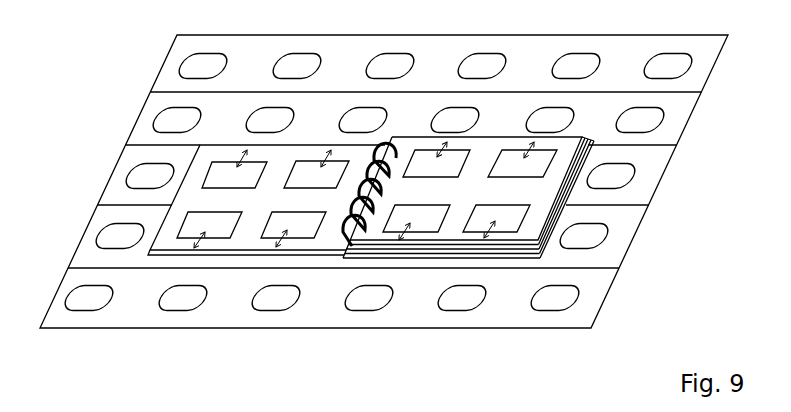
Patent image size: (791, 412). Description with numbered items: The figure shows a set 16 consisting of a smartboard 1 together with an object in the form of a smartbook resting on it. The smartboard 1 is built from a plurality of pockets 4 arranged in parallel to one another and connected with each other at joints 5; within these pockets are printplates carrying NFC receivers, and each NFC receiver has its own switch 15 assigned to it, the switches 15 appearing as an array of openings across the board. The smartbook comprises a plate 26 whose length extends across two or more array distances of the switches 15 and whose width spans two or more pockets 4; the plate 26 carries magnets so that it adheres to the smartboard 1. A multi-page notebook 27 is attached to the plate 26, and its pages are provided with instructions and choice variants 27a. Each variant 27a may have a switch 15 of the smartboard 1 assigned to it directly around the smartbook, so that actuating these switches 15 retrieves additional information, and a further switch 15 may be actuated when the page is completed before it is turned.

The smartboard 1 is at (183, 43).
The pocket 4 is at (675, 128).
The joint 5 is at (685, 92).
The switch 15 is at (396, 60).
The set 16 is at (83, 60).
The plate 26 is at (476, 253).
The multi-page notebook 27 is at (391, 253).
The choice variant 27a is at (507, 220).